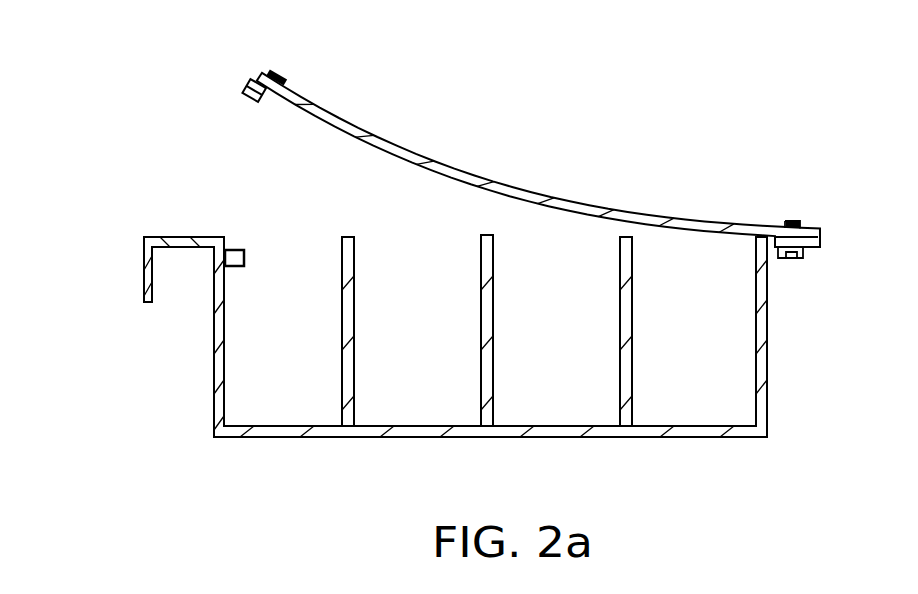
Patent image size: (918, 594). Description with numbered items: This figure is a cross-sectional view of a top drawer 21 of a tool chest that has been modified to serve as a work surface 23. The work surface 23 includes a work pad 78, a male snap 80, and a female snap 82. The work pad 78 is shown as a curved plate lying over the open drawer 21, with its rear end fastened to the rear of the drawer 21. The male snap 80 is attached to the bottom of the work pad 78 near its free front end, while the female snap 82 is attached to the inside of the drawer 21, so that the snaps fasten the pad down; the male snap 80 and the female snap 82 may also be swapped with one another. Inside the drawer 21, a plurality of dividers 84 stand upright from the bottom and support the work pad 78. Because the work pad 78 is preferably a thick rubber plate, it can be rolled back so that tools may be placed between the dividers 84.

The top drawer 21 is at (213, 318).
The work surface 23 is at (560, 196).
The work pad 78 is at (488, 177).
The male snap 80 is at (252, 92).
The female snap 82 is at (233, 249).
The dividers 84 is at (343, 410).